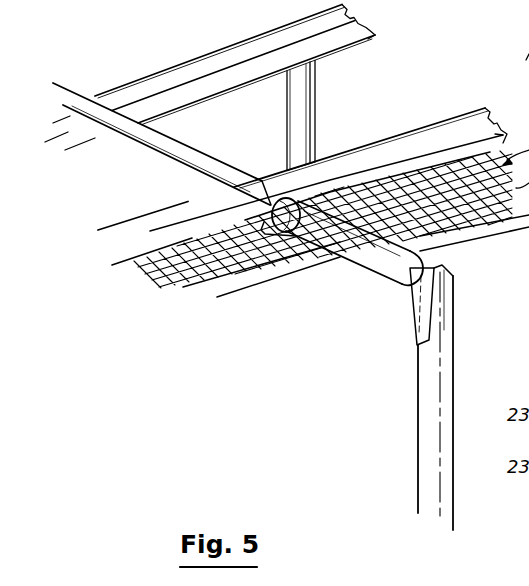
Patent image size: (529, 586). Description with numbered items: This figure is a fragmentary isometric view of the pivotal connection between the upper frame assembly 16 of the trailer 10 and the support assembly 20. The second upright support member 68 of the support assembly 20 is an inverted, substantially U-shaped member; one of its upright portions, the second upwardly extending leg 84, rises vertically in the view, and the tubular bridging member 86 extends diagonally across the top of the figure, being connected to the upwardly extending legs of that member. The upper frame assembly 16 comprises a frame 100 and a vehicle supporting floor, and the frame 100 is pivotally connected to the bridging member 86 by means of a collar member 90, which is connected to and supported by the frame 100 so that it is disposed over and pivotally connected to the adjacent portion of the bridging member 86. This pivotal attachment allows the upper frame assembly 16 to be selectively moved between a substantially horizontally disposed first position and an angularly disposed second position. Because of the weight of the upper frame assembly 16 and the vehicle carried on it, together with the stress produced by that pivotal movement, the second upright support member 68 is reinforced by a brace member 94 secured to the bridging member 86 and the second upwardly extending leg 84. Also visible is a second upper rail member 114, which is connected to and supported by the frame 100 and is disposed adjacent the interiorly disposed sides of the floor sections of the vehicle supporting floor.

The second upper rail member 114 is at (253, 35).
The frame 100 is at (445, 118).
The upper frame assembly 16 is at (380, 129).
The trailer 10 is at (501, 235).
The bridging member 86 is at (141, 157).
The collar member 90 is at (395, 272).
The brace member 94 is at (425, 305).
The second upwardly extending leg 84 is at (455, 383).
The support assembly 20 is at (410, 360).
The second upright support member 68 is at (417, 438).